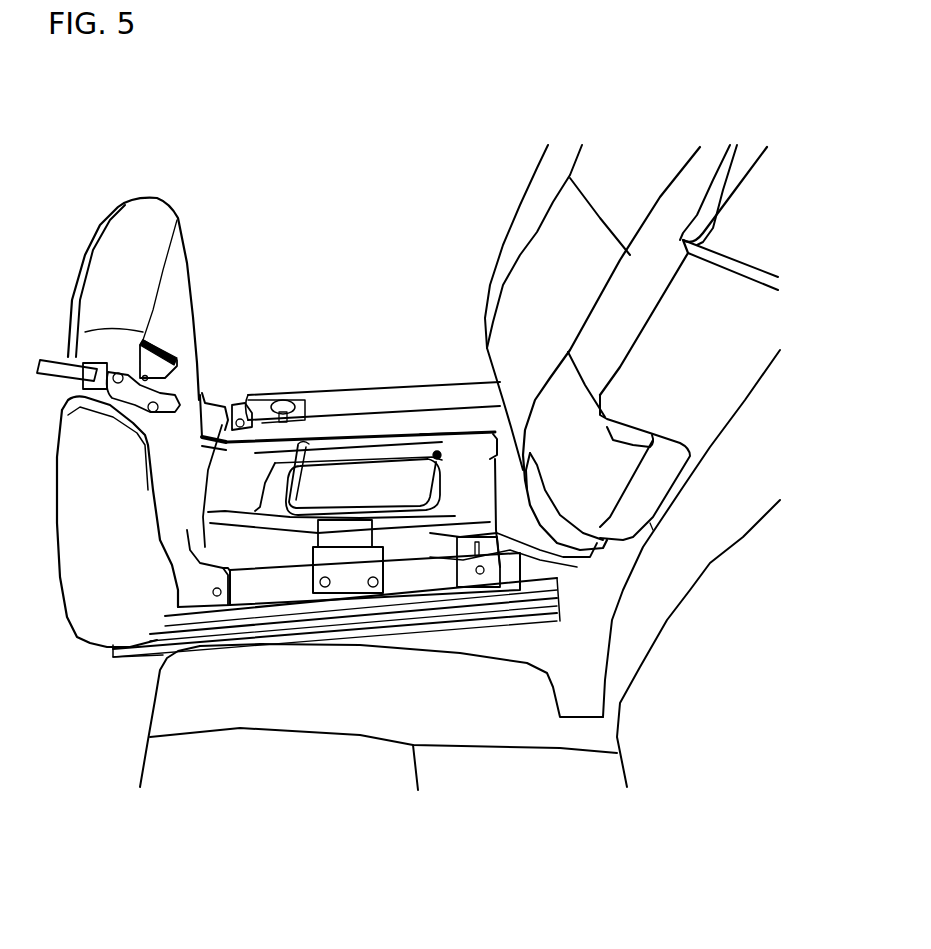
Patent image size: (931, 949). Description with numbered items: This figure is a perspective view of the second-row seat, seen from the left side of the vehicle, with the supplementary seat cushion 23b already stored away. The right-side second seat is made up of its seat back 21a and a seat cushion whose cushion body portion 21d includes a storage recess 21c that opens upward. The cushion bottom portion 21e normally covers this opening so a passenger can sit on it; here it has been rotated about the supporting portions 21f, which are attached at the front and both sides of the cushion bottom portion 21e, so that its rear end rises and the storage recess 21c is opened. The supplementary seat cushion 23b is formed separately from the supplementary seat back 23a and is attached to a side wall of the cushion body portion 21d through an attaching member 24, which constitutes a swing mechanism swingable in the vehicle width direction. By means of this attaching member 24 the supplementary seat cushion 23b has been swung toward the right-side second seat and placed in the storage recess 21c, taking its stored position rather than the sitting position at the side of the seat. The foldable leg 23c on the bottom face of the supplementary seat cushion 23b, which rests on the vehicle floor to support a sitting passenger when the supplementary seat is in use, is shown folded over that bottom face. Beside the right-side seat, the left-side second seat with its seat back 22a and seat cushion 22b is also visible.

The seat back 21a is at (542, 273).
The storage recess 21c is at (515, 495).
The cushion body portion 21d is at (410, 582).
The cushion bottom portion 21e is at (143, 233).
The supporting portion 21f is at (222, 413).
The seat back 22a is at (686, 692).
The seat cushion 22b is at (240, 768).
The supplementary seat back 23a is at (688, 390).
The supplementary seat cushion 23b is at (345, 450).
The foldable leg 23c is at (425, 453).
The attaching member 24 is at (350, 578).